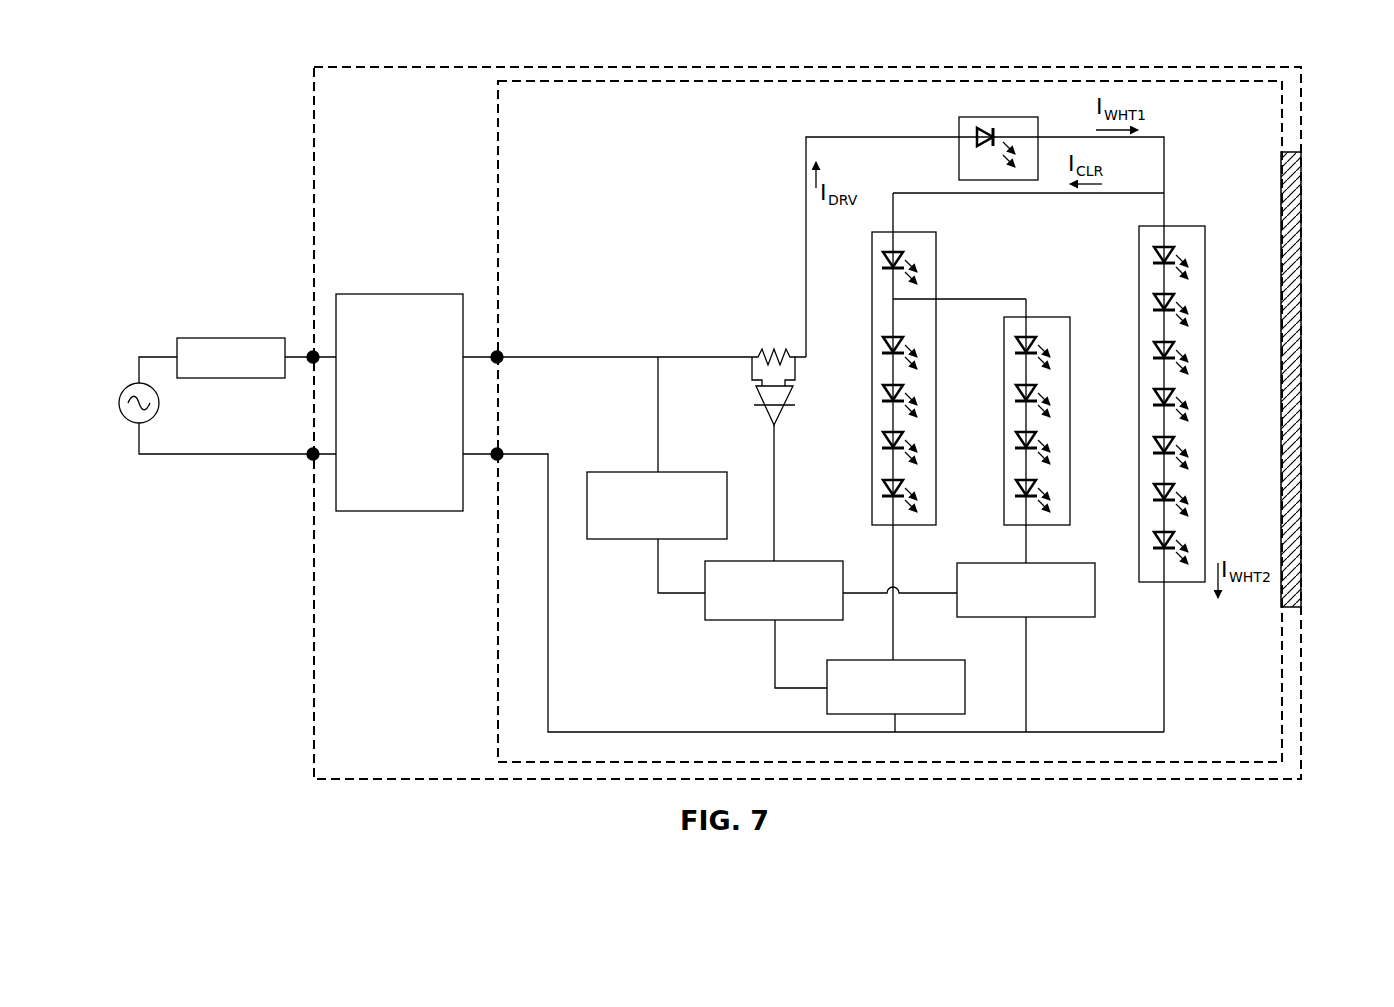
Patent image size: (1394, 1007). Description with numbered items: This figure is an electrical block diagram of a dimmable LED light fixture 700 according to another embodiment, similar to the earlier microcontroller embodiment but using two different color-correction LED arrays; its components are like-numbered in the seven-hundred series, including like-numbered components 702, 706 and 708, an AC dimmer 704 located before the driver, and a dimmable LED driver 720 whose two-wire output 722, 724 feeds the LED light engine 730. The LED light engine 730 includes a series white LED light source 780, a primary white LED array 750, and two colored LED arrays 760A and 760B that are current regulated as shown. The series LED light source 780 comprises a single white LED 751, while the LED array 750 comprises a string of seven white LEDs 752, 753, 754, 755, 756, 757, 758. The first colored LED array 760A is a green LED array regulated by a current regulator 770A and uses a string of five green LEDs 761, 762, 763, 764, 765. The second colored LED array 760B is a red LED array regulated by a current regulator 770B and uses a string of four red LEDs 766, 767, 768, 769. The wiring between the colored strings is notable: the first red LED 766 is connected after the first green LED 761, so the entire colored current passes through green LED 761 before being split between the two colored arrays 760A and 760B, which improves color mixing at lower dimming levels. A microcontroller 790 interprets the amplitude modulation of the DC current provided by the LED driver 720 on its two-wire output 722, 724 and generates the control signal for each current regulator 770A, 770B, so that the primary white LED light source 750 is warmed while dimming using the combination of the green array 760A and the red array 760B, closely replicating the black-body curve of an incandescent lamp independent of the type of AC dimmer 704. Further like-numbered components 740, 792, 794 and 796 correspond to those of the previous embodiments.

The lighting system 700 is at (313, 112).
The AC power source 702 is at (155, 413).
The dimmer 704 is at (189, 337).
The dimmer output line 706 is at (311, 361).
The neutral line 708 is at (311, 450).
The dimmable LED driver 720 is at (410, 294).
The driver output line 722 is at (500, 361).
The driver return line 724 is at (500, 451).
The LED light engine 730 is at (497, 120).
The phosphor/diffuser element 740 is at (1298, 193).
The primary white LED array 750 is at (1195, 226).
The white LED 751 is at (986, 150).
The white LED 752 is at (1177, 258).
The white LED 753 is at (1177, 305).
The white LED 754 is at (1177, 353).
The white LED 755 is at (1177, 400).
The white LED 756 is at (1177, 448).
The white LED 757 is at (1177, 495).
The white LED 758 is at (1177, 543).
The first colored LED array 760A is at (925, 232).
The second colored LED array 760B is at (1058, 317).
The green LED 761 is at (906, 263).
The green LED 762 is at (906, 348).
The green LED 763 is at (906, 396).
The green LED 764 is at (906, 443).
The green LED 765 is at (906, 491).
The red LED 766 is at (1039, 348).
The red LED 767 is at (1039, 396).
The red LED 768 is at (1039, 443).
The red LED 769 is at (1039, 491).
The current regulator 770A is at (930, 660).
The current regulator 770B is at (1060, 563).
The series white LED light source 780 is at (1028, 117).
The microcontroller 790 is at (805, 561).
The 5V regulator 792 is at (689, 472).
The comparator/op-amp 794 is at (770, 419).
The sense resistor 796 is at (771, 350).